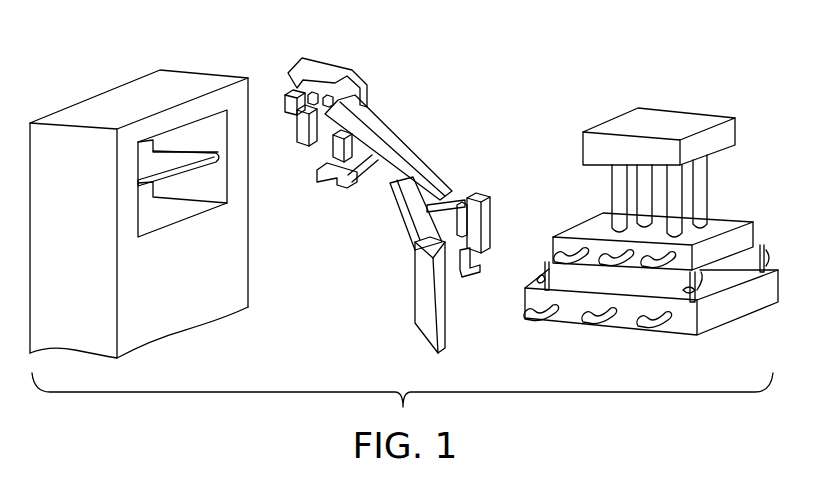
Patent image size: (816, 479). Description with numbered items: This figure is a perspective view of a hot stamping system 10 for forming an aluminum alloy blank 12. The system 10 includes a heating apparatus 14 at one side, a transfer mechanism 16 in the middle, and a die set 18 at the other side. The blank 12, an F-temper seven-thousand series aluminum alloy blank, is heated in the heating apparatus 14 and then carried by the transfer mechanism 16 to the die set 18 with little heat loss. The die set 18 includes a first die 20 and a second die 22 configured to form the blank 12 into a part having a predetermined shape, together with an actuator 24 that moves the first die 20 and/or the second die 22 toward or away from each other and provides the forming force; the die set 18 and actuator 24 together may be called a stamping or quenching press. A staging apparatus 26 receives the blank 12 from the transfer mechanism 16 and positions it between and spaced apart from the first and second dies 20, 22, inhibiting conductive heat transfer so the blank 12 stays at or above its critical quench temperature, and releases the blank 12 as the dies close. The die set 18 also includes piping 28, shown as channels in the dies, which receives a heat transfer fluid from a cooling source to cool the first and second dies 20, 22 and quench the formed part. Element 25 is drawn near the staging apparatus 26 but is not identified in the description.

The hot stamping system 10 is at (133, 66).
The blank 12 is at (200, 157).
The heating apparatus 14 is at (72, 112).
The transfer mechanism 16 is at (448, 310).
The die set 18 is at (732, 217).
The first die 20 is at (750, 233).
The second die 22 is at (762, 297).
The actuator 24 is at (730, 132).
The clamp 25 is at (700, 302).
The staging apparatus 26 is at (702, 280).
The piping 28 is at (553, 237).